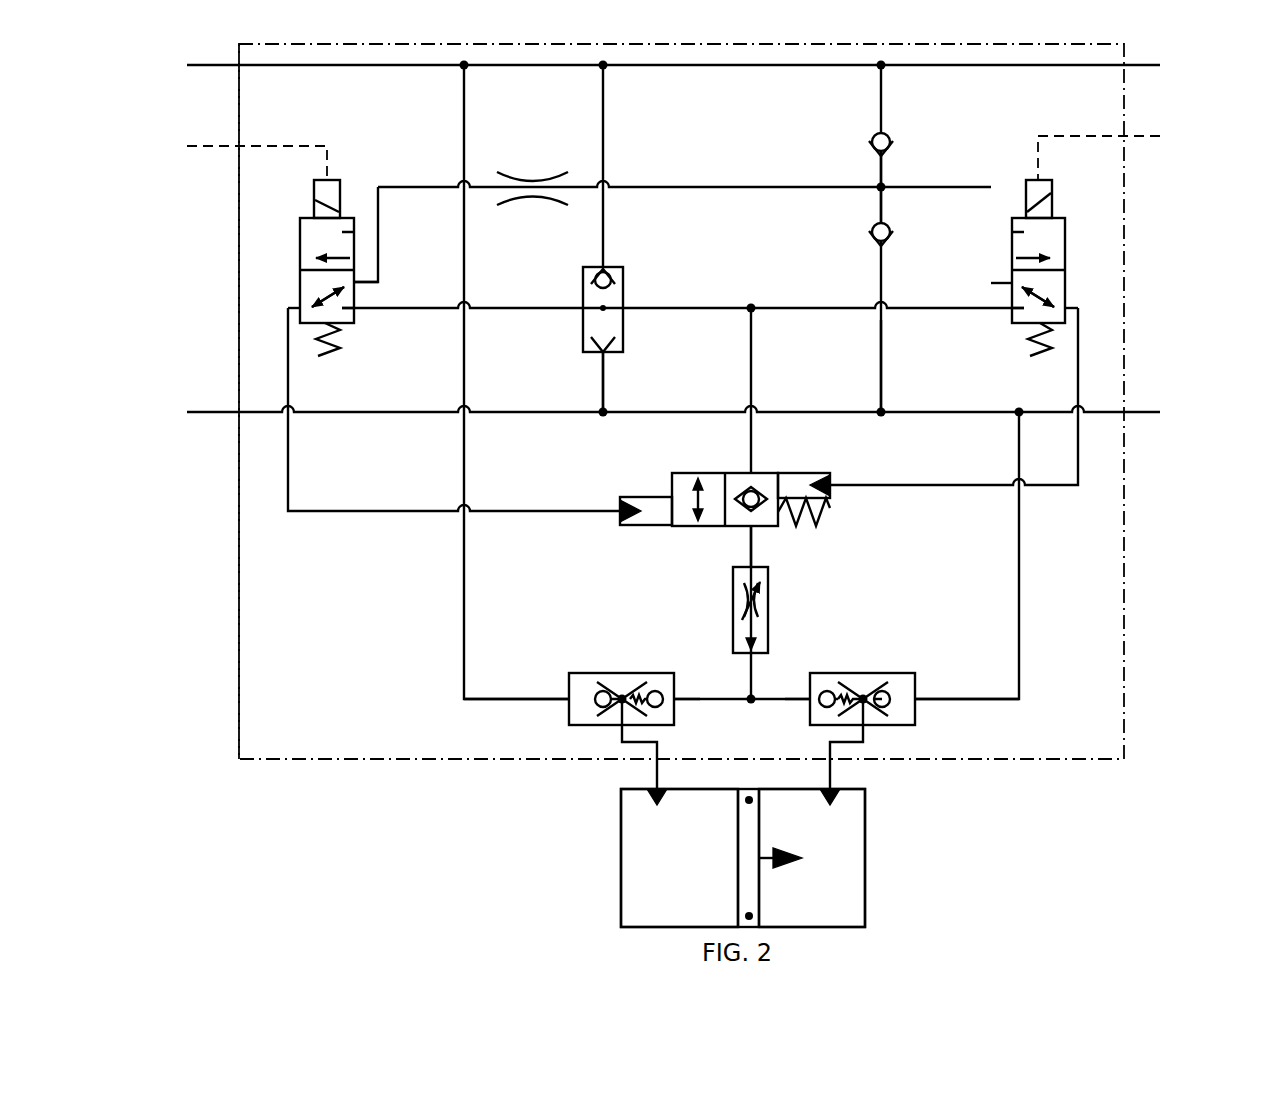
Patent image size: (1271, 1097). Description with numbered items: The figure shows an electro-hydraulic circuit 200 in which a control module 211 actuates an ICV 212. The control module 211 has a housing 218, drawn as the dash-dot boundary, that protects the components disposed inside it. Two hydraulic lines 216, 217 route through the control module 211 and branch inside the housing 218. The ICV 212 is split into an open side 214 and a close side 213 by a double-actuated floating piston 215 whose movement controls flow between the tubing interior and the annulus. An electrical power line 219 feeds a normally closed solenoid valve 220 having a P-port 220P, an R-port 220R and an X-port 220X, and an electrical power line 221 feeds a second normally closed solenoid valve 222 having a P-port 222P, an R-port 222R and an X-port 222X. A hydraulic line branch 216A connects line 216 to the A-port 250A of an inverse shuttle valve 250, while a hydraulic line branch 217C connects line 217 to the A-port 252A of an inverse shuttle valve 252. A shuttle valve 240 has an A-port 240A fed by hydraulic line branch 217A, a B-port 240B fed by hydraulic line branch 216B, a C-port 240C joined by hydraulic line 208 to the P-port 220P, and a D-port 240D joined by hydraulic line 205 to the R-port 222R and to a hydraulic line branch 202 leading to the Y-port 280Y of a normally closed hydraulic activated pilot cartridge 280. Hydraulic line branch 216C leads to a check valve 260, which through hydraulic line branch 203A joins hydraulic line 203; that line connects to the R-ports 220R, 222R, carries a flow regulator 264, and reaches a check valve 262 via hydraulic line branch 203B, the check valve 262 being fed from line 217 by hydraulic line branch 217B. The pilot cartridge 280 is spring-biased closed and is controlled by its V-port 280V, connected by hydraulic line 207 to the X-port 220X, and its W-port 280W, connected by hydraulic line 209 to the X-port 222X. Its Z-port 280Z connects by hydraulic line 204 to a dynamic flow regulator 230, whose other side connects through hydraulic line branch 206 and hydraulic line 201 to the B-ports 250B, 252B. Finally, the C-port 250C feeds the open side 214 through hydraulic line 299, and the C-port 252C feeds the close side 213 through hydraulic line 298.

The hydraulic system 200 is at (262, 845).
The hydraulic line 201 is at (705, 699).
The hydraulic line branch 202 is at (751, 353).
The hydraulic line 203 is at (783, 186).
The hydraulic line branch 203A is at (882, 170).
The hydraulic line branch 203B is at (882, 207).
The hydraulic line 204 is at (746, 534).
The hydraulic line 205 is at (798, 310).
The hydraulic line branch 206 is at (753, 673).
The hydraulic line 207 is at (387, 511).
The hydraulic line 208 is at (431, 309).
The hydraulic line 209 is at (952, 487).
The control module 211 is at (1134, 619).
The ICV 212 is at (870, 906).
The close side 213 is at (811, 874).
The open side 214 is at (658, 874).
The double-actuated floating piston 215 is at (749, 893).
The hydraulic line 216 is at (226, 68).
The hydraulic line branch 216A is at (464, 655).
The hydraulic line branch 216B is at (606, 130).
The hydraulic line branch 216C is at (881, 104).
The hydraulic line 217 is at (226, 424).
The hydraulic line branch 217A is at (603, 396).
The hydraulic line branch 217B is at (881, 365).
The hydraulic line branch 217C is at (1020, 628).
The housing 218 is at (238, 712).
The electrical power line 219 is at (278, 145).
The NC SOV 220 is at (299, 228).
The P-port 220P is at (358, 316).
The R-port 220R is at (358, 281).
The X-port 220X is at (298, 300).
The electrical power line 221 is at (1086, 140).
The NC SOV 222 is at (1066, 232).
The P-port 222P is at (1008, 316).
The R-port 222R is at (1010, 283).
The X-port 222X is at (1070, 300).
The dynamic flow regulator 230 is at (770, 642).
The shuttle valve 240 is at (583, 322).
The A-port 240A is at (612, 353).
The B-port 240B is at (607, 267).
The C-port 240C is at (583, 305).
The D-port 240D is at (628, 313).
The inverse shuttle valve 250 is at (617, 672).
The A-port 250A is at (566, 706).
The B-port 250B is at (680, 697).
The C-port 250C is at (617, 731).
The inverse shuttle valve 252 is at (872, 672).
The A-port 252A is at (918, 706).
The B-port 252B is at (806, 703).
The C-port 252C is at (866, 731).
The check valve 260 is at (890, 134).
The check valve 262 is at (870, 236).
The flow regulator 264 is at (541, 179).
The NC hydraulic activated pilot cartridge 280 is at (712, 527).
The V-port 280V is at (617, 517).
The W-port 280W is at (834, 492).
The Y-port 280Y is at (758, 470).
The Z-port 280Z is at (758, 530).
The hydraulic line 298 is at (835, 779).
The hydraulic line 299 is at (652, 779).